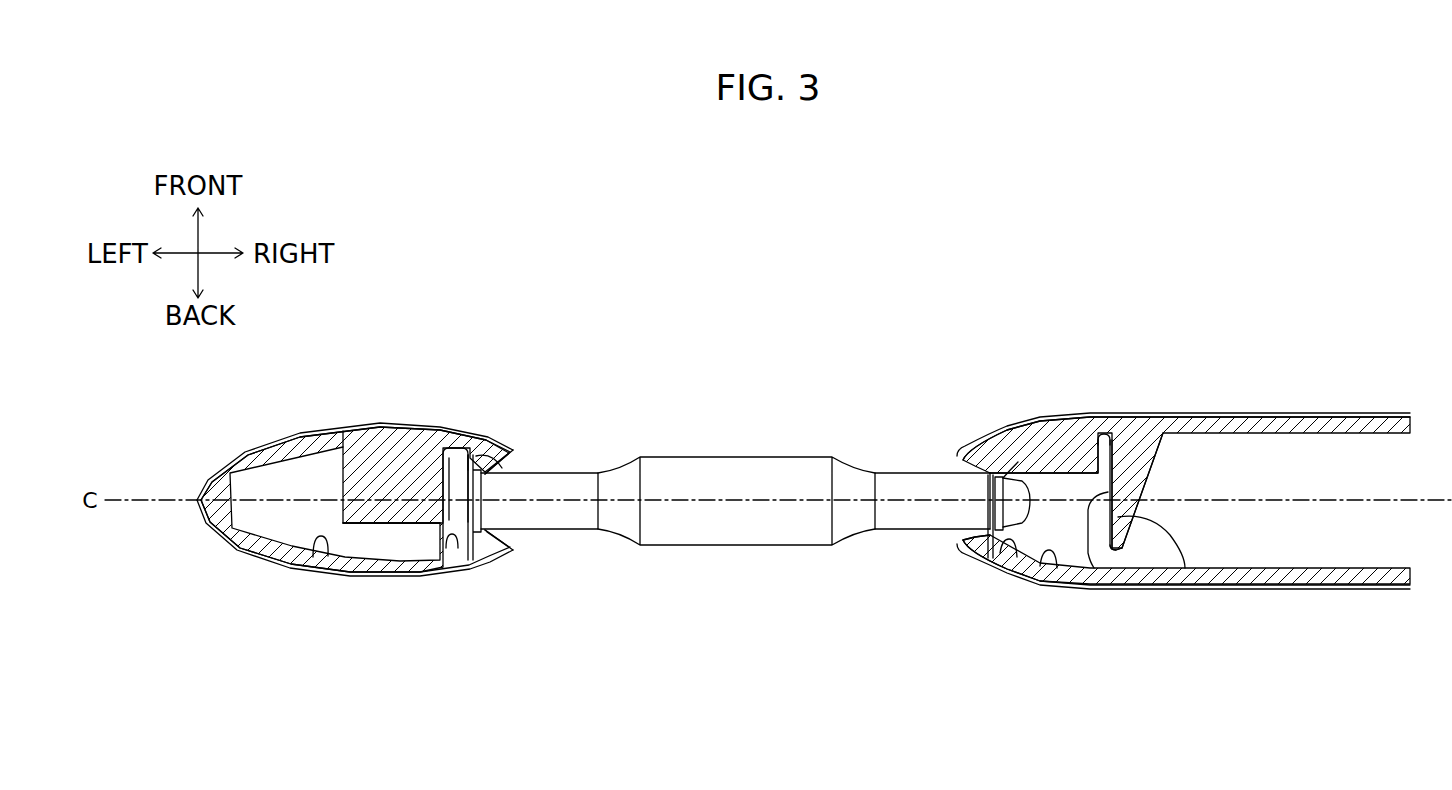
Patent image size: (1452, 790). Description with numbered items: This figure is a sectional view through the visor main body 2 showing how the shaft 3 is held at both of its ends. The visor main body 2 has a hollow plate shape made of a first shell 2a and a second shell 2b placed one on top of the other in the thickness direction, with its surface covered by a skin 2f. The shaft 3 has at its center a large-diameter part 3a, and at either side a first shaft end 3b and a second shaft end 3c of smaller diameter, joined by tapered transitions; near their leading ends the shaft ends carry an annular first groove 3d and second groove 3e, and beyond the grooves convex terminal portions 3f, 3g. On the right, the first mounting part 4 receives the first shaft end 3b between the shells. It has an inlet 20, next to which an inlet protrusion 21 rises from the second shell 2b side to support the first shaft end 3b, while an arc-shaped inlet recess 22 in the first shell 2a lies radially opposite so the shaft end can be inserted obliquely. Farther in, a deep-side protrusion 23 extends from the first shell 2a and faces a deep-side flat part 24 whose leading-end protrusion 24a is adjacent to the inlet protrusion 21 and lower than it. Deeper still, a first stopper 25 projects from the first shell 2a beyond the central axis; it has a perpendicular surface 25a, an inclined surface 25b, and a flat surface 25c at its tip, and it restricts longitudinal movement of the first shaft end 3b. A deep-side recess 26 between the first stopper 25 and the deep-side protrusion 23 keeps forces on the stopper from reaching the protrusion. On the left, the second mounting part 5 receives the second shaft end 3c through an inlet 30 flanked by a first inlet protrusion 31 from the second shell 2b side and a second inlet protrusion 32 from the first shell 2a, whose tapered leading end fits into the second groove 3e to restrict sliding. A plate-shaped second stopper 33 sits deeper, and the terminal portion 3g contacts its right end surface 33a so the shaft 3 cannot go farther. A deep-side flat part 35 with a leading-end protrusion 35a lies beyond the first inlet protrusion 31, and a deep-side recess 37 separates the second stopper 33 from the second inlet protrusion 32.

The visor main body 2 is at (1342, 400).
The first shell 2a is at (236, 442).
The second shell 2b is at (268, 570).
The skin 2f is at (212, 556).
The shaft 3 is at (698, 434).
The large-diameter part 3a is at (770, 482).
The first shaft end 3b is at (895, 478).
The second shaft end 3c is at (568, 480).
The first groove 3d is at (987, 512).
The second groove 3e is at (472, 535).
The terminal portion 3f is at (1008, 455).
The terminal portion 3g is at (443, 535).
The first mounting part 4 is at (1179, 386).
The second mounting part 5 is at (466, 408).
The inlet 20 is at (1000, 483).
The inlet protrusion 21 is at (980, 568).
The inlet recess 22 is at (977, 466).
The deep-side protrusion 23 is at (1068, 447).
The deep-side flat part 24 is at (1052, 565).
The leading-end protrusion 24a is at (1013, 555).
The first stopper 25 is at (1152, 480).
The perpendicular surface 25a is at (1090, 560).
The inclined surface 25b is at (1145, 520).
The flat surface 25c is at (1122, 552).
The deep-side recess 26 is at (1112, 440).
The inlet 30 is at (520, 467).
The first inlet protrusion 31 is at (510, 565).
The second inlet protrusion 32 is at (498, 443).
The second stopper 33 is at (384, 440).
The right end surface 33a is at (440, 518).
The deep-side flat part 35 is at (325, 576).
The leading-end protrusion 35a is at (452, 548).
The deep-side recess 37 is at (428, 445).